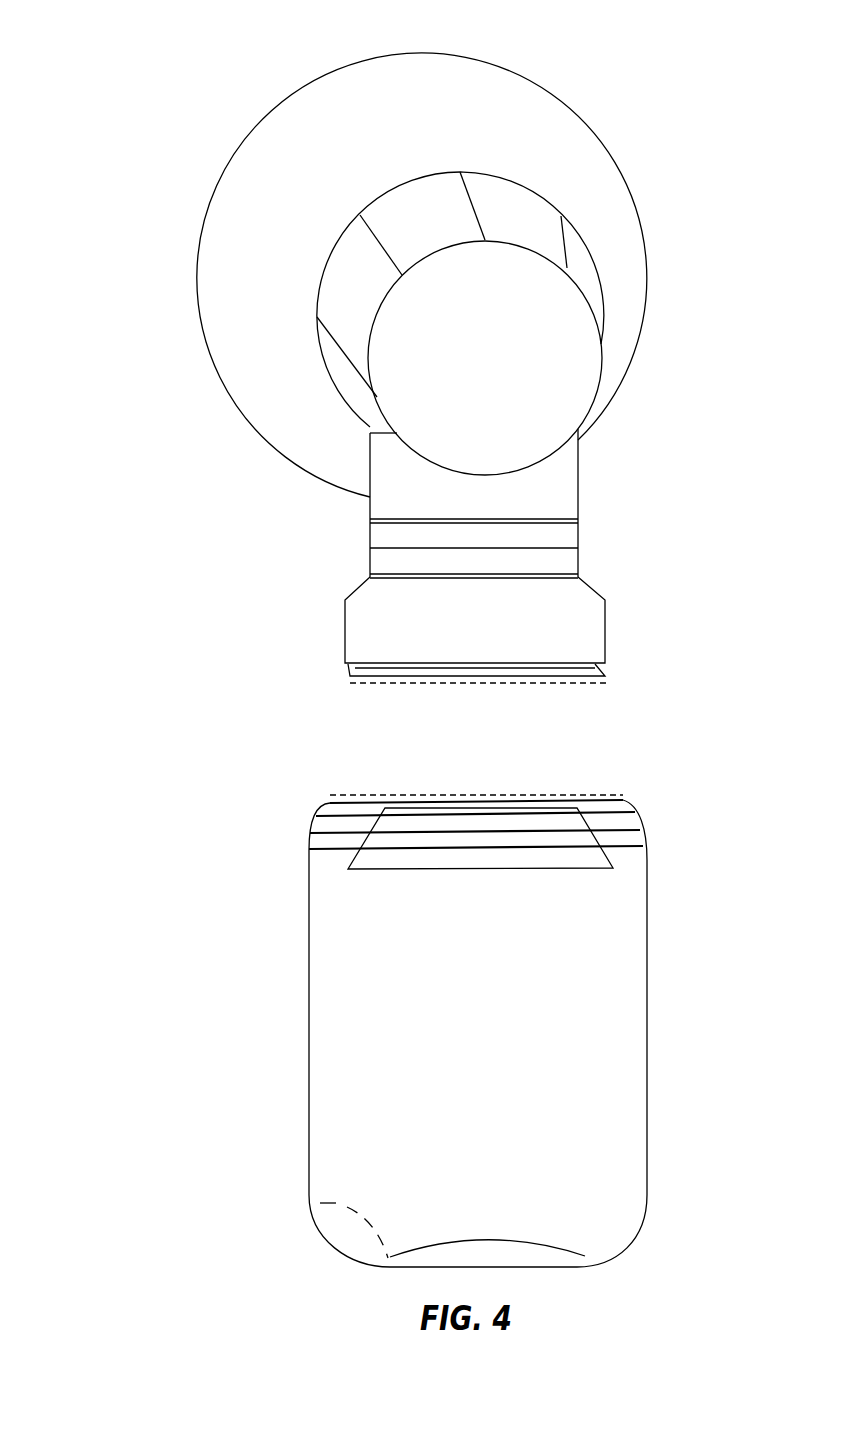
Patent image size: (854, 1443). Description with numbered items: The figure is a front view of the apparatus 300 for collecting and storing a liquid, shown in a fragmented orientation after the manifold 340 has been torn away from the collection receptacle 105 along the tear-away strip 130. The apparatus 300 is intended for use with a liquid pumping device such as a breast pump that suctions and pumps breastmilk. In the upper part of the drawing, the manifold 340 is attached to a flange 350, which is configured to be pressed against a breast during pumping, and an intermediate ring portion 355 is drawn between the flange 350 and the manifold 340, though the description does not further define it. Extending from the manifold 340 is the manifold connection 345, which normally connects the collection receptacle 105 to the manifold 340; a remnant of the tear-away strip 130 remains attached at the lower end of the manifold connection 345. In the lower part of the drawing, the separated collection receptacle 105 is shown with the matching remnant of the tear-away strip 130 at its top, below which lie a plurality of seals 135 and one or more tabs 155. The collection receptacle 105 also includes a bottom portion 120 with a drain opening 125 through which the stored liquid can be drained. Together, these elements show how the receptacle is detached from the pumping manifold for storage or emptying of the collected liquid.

The apparatus 300 is at (162, 63).
The flange 350 is at (230, 397).
The intermediate ring with spokes 355 is at (570, 220).
The manifold 340 is at (577, 366).
The manifold connection 345 is at (583, 580).
The tear-away strip 130 is at (352, 686).
The collection receptacle 105 is at (620, 1051).
The seals 135 is at (333, 815).
The tabs 155 is at (612, 861).
The bottom portion 120 is at (528, 1247).
The drain opening 125 is at (352, 1205).